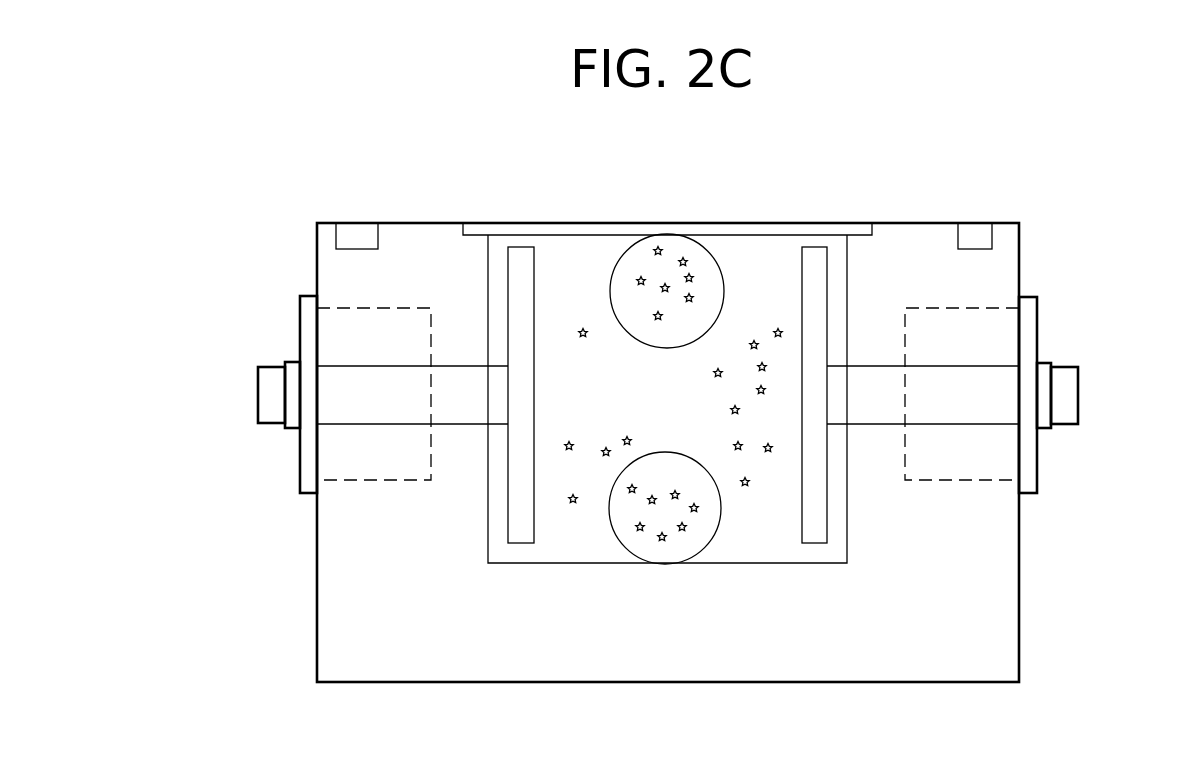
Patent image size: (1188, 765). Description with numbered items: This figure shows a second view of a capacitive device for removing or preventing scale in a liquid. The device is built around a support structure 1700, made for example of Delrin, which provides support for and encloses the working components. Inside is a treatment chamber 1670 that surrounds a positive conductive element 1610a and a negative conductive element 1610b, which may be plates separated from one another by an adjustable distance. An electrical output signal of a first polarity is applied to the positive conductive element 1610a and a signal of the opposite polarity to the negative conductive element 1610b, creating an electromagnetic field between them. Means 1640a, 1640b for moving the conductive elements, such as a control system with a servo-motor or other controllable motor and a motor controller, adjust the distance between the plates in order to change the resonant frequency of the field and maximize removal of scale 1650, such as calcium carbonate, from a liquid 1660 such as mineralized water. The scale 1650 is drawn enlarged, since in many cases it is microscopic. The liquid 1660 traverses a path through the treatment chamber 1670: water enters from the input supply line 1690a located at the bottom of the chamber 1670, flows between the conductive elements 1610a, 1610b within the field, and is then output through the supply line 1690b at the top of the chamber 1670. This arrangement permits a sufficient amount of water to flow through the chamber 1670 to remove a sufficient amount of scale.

The support structure 1700 is at (422, 682).
The means for moving the positive and negative conductive elements 1640a is at (267, 406).
The means for moving the positive and negative conductive elements 1640b is at (1078, 388).
The treatment chamber 1670 is at (578, 563).
The positive conductive element 1610a is at (508, 268).
The negative conductive element 1610b is at (827, 277).
The input supply line 1690a is at (710, 540).
The output supply line 1690b is at (665, 348).
The liquid 1660 is at (738, 323).
The scale 1650 is at (768, 450).